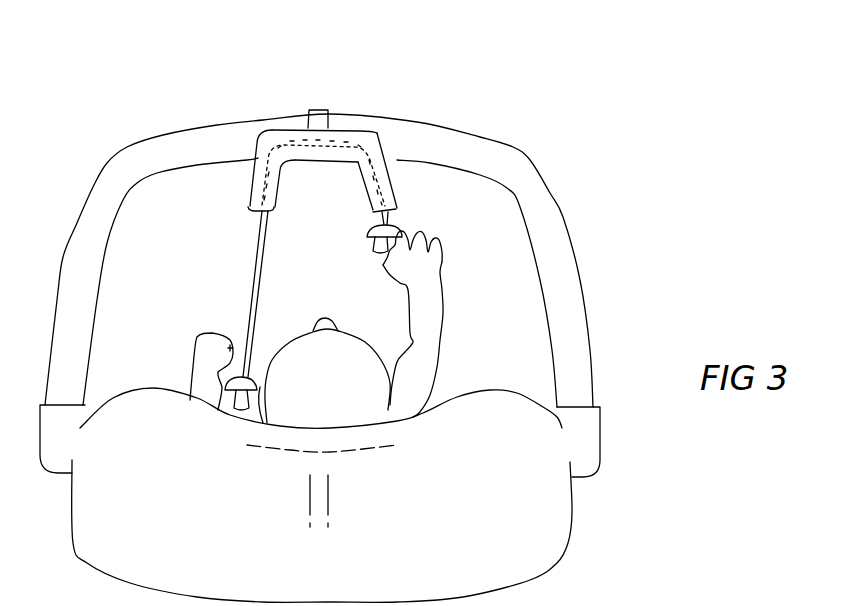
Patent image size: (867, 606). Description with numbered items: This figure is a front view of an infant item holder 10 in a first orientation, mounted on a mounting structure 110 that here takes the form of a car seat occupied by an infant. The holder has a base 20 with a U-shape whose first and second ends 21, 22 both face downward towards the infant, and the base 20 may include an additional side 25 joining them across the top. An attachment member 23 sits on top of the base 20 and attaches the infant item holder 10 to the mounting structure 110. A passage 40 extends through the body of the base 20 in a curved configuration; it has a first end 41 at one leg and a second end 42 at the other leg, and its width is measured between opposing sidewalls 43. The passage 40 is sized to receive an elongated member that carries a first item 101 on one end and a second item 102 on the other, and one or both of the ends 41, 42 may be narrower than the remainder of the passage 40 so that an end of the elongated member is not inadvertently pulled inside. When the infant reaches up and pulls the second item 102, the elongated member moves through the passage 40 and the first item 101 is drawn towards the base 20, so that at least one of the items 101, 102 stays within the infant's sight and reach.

The infant item holder 10 is at (279, 93).
The base 20 is at (355, 149).
The first end 21 is at (248, 180).
The second end 22 is at (392, 178).
The attachment member 23 is at (320, 110).
The additional side 25 is at (330, 163).
The passage 40 is at (380, 162).
The first end 41 is at (268, 212).
The second end 42 is at (372, 220).
The sidewalls 43 is at (273, 182).
The first item 101 is at (252, 365).
The second item 102 is at (368, 237).
The mounting structure 110 is at (553, 222).